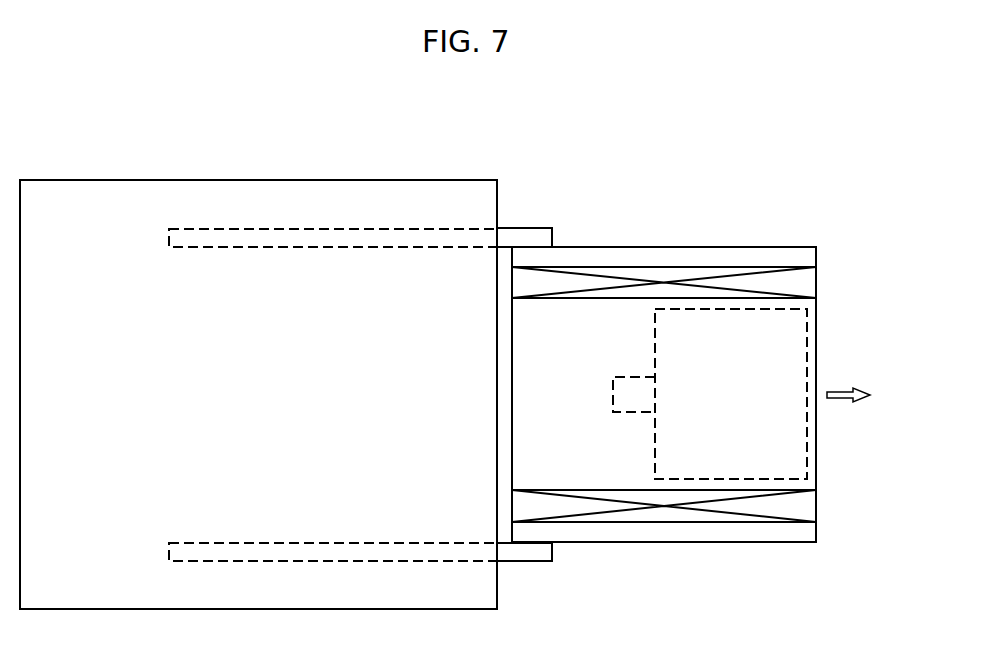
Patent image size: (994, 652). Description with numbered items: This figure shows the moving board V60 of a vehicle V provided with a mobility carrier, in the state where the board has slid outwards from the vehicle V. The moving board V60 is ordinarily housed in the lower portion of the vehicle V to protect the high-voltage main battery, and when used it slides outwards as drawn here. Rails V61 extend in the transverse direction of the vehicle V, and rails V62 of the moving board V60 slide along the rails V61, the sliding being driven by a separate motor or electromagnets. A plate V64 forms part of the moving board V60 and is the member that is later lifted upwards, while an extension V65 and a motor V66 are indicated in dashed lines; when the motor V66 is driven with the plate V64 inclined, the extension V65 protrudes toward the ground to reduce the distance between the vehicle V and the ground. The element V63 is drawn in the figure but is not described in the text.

The vehicle V is at (272, 180).
The moving board V60 is at (806, 247).
The rails V61 is at (530, 235).
The rails of the moving board V62 is at (632, 248).
The elastic members V63 is at (728, 270).
The plate V64 is at (816, 456).
The extension V65 is at (800, 343).
The motor V66 is at (635, 412).